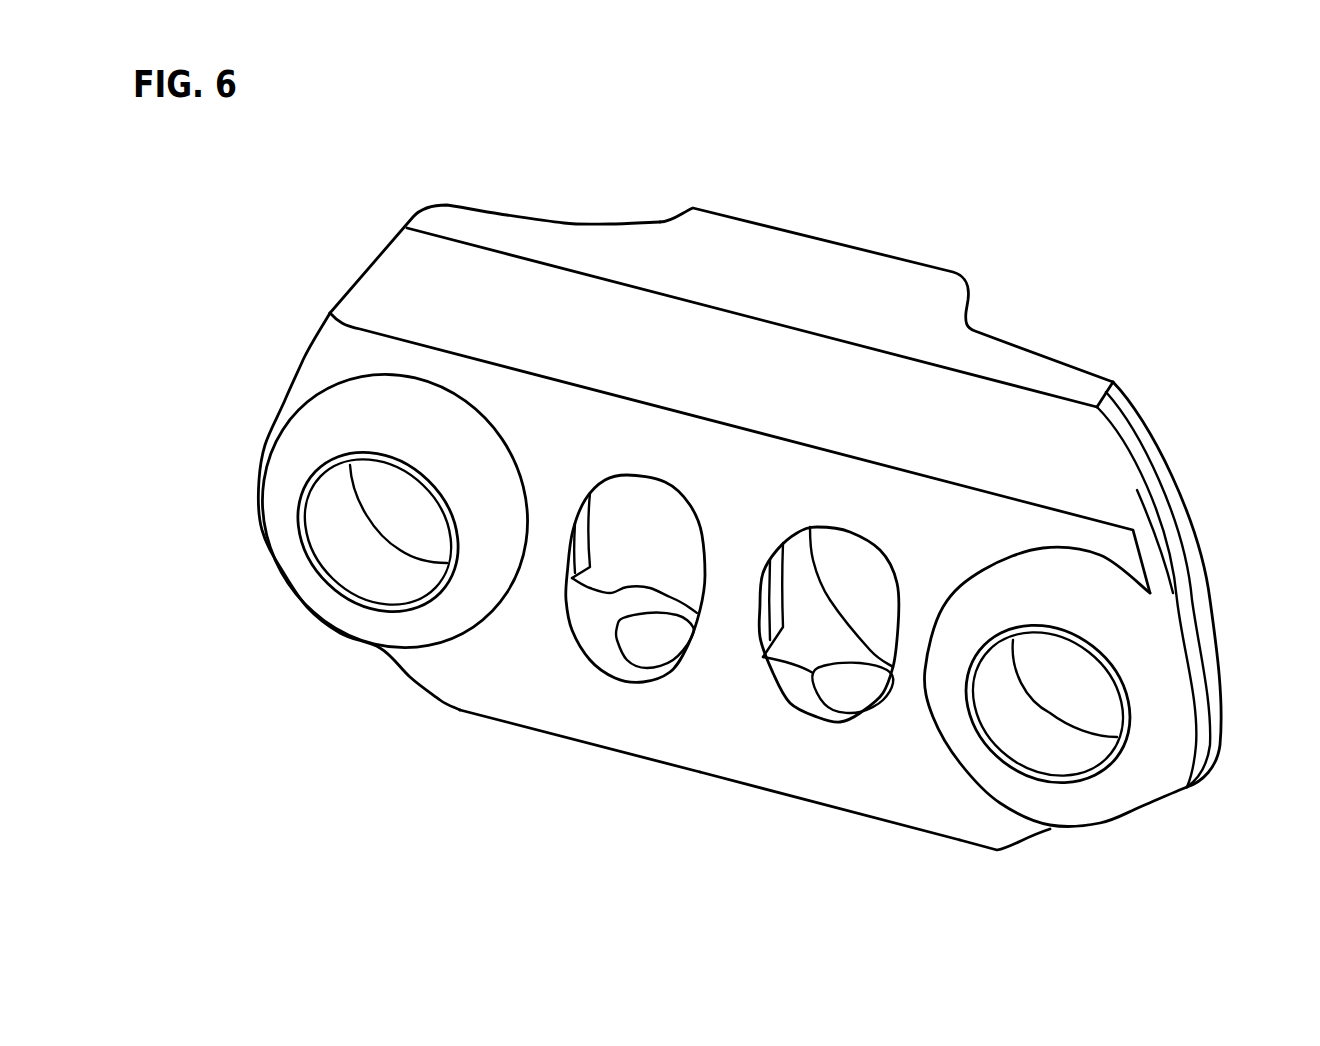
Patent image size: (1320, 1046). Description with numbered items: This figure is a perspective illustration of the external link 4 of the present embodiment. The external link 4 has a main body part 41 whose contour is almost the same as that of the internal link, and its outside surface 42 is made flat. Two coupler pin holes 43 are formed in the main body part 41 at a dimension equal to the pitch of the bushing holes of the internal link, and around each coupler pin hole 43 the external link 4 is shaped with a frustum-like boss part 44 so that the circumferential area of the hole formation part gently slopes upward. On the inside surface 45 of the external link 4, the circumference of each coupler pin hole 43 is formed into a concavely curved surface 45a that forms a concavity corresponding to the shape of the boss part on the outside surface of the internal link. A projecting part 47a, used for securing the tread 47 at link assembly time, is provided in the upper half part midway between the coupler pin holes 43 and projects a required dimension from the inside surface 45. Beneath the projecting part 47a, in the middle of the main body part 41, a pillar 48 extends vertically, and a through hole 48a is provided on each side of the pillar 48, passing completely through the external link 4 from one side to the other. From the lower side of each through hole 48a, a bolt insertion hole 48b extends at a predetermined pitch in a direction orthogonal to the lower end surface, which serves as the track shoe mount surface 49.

The external link 4 is at (1080, 348).
The main body part 41 is at (523, 657).
The outside surface 42 is at (700, 755).
The coupler pin hole 43 is at (334, 557).
The boss part 44 is at (287, 488).
The inside surface 45 is at (567, 210).
The concavely curved surface 45a is at (1160, 613).
The tread 47 is at (993, 367).
The projecting part 47a is at (873, 277).
The pillar 48 is at (733, 615).
The through hole 48a is at (655, 555).
The bolt insertion hole 48b is at (634, 633).
The track shoe mount surface 49 is at (950, 837).